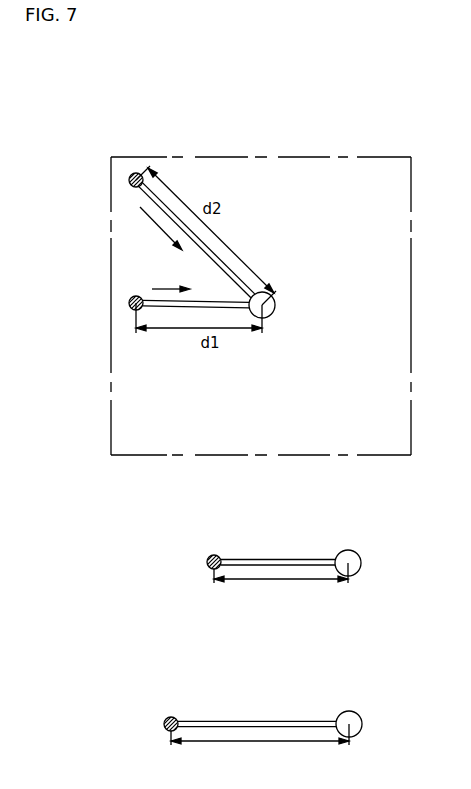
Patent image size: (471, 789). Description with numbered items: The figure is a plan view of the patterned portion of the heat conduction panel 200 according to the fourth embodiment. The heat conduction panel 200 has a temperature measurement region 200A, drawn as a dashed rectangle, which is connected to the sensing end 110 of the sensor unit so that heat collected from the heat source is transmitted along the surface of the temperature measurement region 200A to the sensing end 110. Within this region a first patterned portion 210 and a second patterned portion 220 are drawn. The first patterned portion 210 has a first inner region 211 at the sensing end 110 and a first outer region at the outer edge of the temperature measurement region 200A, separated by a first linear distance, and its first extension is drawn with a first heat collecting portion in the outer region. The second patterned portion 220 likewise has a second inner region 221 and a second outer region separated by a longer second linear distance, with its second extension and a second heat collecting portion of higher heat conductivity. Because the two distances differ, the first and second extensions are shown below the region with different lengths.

The heat conduction panel 200 is at (143, 117).
The temperature measurement region 200A is at (208, 157).
The sensing end 110 is at (271, 313).
The first patterned portion 210 is at (171, 553).
The first inner region 211 is at (348, 550).
The second patterned portion 220 is at (131, 715).
The second inner region 221 is at (349, 711).